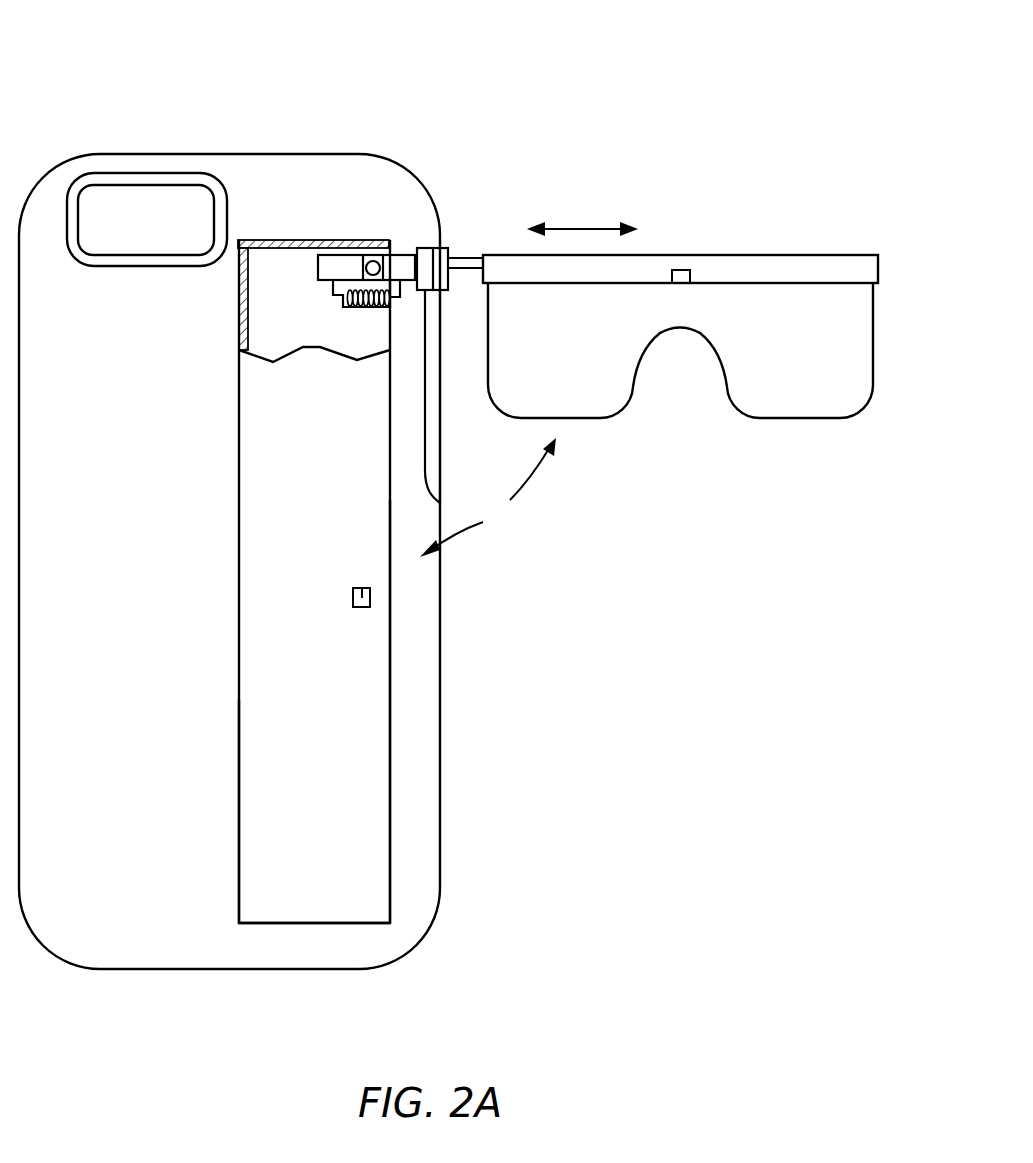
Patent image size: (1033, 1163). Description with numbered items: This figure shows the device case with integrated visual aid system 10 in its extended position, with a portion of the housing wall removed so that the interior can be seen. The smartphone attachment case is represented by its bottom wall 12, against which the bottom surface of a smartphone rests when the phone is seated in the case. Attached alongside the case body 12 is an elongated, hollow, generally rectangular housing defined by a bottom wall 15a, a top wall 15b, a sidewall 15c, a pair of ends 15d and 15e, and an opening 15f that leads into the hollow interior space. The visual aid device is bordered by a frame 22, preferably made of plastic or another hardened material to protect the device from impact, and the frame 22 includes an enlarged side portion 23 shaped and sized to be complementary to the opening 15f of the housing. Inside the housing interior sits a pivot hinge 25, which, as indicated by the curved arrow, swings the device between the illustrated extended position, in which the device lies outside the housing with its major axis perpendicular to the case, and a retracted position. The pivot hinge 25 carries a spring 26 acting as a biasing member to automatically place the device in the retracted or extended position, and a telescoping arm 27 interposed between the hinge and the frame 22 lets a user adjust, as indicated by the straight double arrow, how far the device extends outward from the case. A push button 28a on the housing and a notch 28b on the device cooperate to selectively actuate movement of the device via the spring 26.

The system 10 is at (88, 82).
The bottom wall 12 is at (145, 609).
The bottom wall 15a is at (305, 316).
The top wall 15b is at (328, 663).
The sidewall 15c is at (239, 795).
The end 15d is at (306, 240).
The end 15e is at (307, 923).
The opening 15f is at (393, 745).
The frame 22 is at (730, 387).
The enlarged side portion 23 is at (673, 258).
The pivot hinge 25 is at (375, 258).
The spring 26 is at (355, 307).
The telescoping arm 27 is at (437, 262).
The push button 28a is at (360, 588).
The notch 28b is at (683, 270).